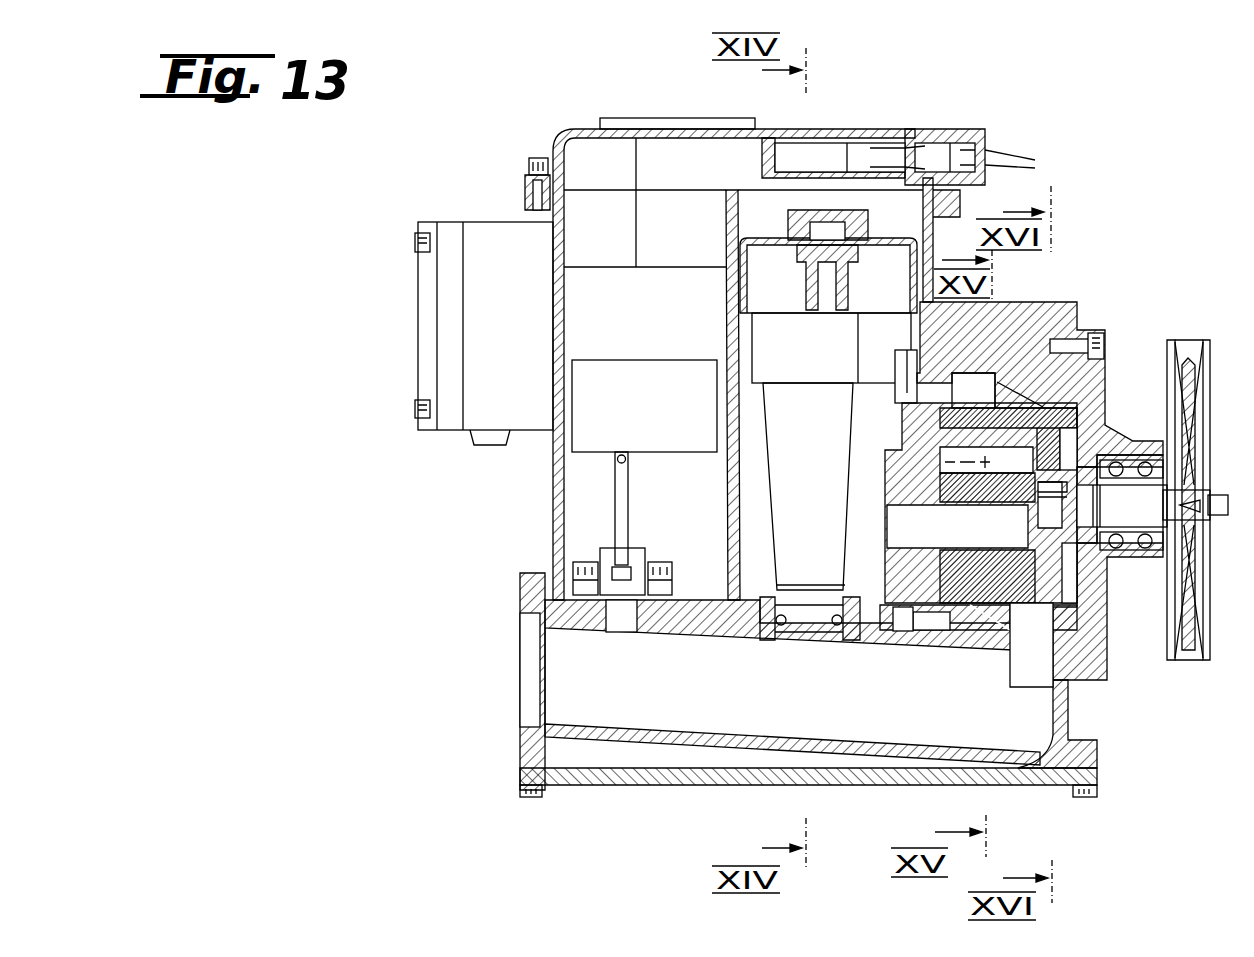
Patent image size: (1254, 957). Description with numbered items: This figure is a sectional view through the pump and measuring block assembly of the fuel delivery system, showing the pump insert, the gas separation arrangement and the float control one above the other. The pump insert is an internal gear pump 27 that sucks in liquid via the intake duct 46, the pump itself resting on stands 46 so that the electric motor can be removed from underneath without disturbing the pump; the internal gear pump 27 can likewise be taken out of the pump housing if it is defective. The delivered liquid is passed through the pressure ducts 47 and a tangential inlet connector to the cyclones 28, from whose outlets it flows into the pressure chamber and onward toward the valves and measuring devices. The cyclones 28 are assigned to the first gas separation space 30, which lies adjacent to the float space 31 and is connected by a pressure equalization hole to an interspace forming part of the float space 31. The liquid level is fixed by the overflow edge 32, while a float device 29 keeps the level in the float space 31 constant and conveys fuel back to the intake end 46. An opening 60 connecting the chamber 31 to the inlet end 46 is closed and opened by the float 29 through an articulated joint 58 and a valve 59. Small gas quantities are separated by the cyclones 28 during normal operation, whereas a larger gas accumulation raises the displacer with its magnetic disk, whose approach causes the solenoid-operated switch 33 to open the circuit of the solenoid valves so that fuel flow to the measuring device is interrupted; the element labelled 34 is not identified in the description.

The internal gear pump 27 is at (975, 440).
The cyclones 28 is at (797, 463).
The float device 29 is at (625, 388).
The first gas separation space 30 is at (765, 215).
The float space 31 is at (583, 287).
The overflow edge 32 is at (610, 265).
The solenoid-operated switch 33 is at (815, 160).
The sensor cap 34 is at (878, 273).
The intake duct 46 is at (945, 700).
The pressure ducts 47 is at (975, 395).
The articulated joint 58 is at (615, 487).
The valve 59 is at (607, 575).
The opening 60 is at (625, 612).